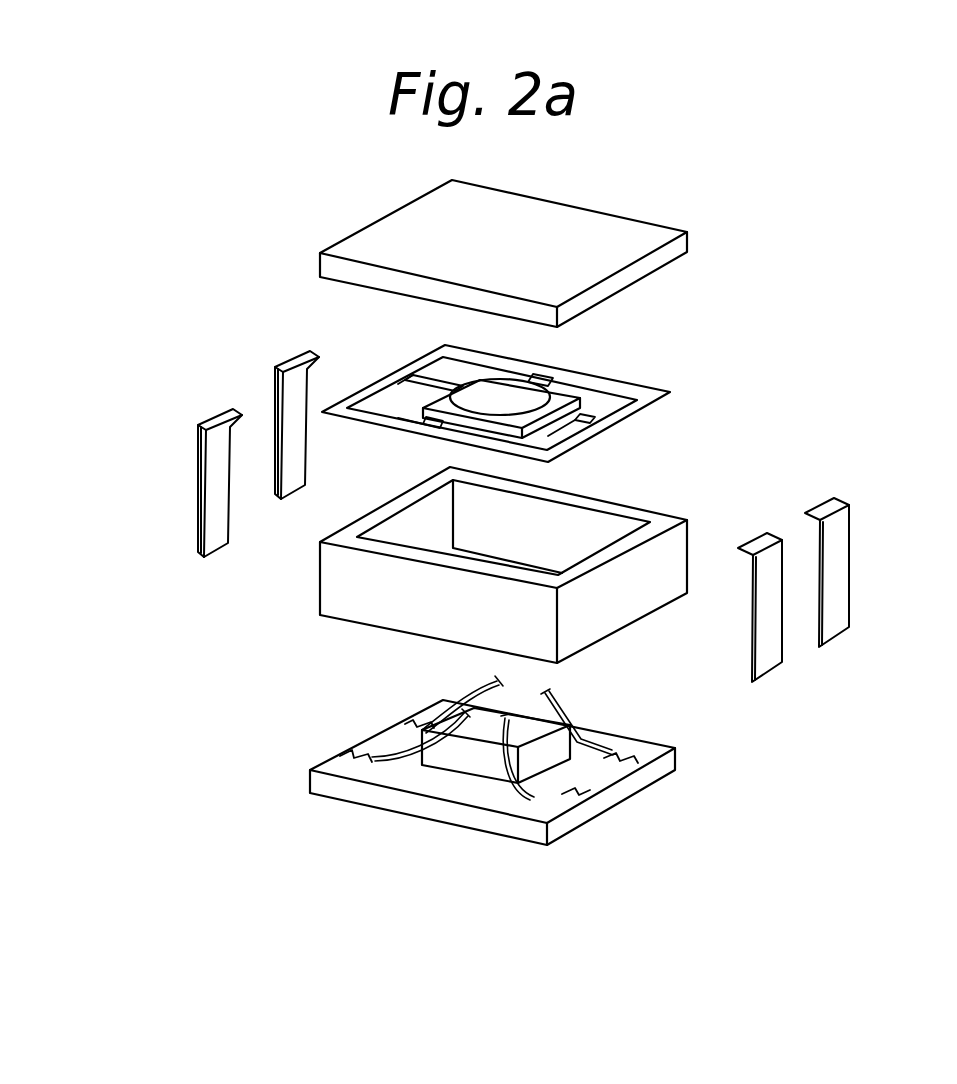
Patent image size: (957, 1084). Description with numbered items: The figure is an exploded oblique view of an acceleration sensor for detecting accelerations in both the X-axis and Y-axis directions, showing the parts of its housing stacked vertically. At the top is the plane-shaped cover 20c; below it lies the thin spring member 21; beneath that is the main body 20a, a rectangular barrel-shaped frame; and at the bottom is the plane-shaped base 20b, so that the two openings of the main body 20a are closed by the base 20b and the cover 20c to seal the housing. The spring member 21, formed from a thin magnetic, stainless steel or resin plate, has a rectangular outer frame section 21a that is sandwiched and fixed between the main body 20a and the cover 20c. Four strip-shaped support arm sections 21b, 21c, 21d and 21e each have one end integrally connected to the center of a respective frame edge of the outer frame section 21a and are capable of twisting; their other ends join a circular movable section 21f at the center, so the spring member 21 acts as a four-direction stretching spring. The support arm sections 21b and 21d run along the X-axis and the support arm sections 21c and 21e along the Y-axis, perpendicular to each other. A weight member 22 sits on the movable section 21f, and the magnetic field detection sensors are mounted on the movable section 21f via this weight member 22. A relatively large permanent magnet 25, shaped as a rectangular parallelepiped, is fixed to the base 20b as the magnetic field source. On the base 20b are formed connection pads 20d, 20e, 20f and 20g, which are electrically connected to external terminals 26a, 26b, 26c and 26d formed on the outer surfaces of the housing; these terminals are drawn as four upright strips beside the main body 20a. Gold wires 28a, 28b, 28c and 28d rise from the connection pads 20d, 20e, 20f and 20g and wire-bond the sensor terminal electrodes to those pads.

The main body 20a is at (677, 548).
The base 20b is at (678, 758).
The cover 20c is at (651, 234).
The connection pad 20d is at (570, 802).
The connection pad 20e is at (640, 763).
The connection pad 20f is at (347, 752).
The connection pad 20g is at (413, 722).
The spring member 21 is at (668, 380).
The outer frame section 21a is at (632, 380).
The support arm section 21b is at (428, 382).
The support arm section 21c is at (535, 378).
The support arm section 21d is at (586, 422).
The support arm section 21e is at (421, 416).
The movable section 21f is at (502, 407).
The weight member 22 is at (563, 397).
The permanent magnet 25 is at (467, 757).
The external terminal 26a is at (768, 652).
The external terminal 26b is at (840, 592).
The external terminal 26c is at (210, 483).
The external terminal 26d is at (288, 418).
The gold wire 28a is at (522, 783).
The gold wire 28b is at (605, 742).
The gold wire 28c is at (392, 753).
The gold wire 28d is at (477, 692).